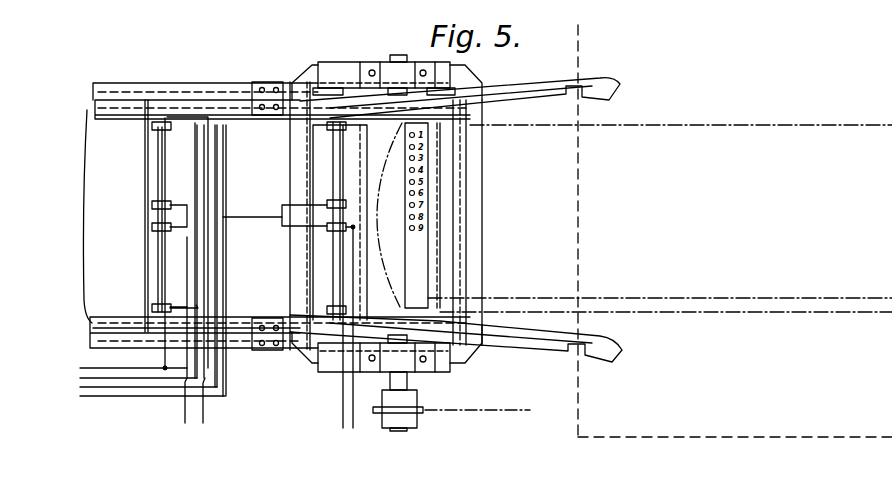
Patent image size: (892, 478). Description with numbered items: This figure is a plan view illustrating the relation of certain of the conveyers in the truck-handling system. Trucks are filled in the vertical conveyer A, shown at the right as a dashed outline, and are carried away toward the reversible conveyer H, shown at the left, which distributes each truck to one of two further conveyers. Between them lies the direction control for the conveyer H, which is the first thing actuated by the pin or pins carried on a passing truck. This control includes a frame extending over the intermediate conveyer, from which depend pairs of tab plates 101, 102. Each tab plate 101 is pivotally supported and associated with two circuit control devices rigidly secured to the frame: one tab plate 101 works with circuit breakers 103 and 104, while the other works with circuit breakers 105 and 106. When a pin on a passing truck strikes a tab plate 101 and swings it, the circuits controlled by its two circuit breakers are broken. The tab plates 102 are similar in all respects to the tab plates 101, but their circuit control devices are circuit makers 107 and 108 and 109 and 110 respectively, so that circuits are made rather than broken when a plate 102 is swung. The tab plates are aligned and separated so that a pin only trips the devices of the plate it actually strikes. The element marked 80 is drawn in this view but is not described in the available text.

The arm 80 is at (456, 220).
The tab plate 101 is at (341, 172).
The tab plate 102 is at (158, 176).
The circuit breaker 103 is at (327, 309).
The circuit breaker 104 is at (327, 229).
The circuit breaker 105 is at (327, 203).
The circuit breaker 106 is at (328, 127).
The circuit maker 107 is at (153, 308).
The circuit maker 108 is at (153, 228).
The circuit maker 109 is at (153, 205).
The circuit maker 110 is at (153, 126).
The conveyer H is at (276, 216).
The vertical conveyer A is at (660, 231).